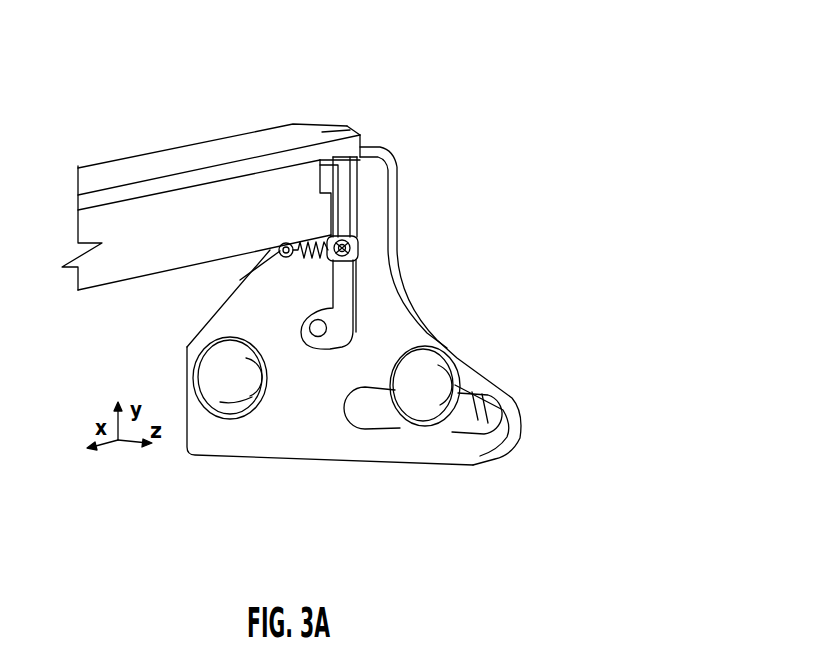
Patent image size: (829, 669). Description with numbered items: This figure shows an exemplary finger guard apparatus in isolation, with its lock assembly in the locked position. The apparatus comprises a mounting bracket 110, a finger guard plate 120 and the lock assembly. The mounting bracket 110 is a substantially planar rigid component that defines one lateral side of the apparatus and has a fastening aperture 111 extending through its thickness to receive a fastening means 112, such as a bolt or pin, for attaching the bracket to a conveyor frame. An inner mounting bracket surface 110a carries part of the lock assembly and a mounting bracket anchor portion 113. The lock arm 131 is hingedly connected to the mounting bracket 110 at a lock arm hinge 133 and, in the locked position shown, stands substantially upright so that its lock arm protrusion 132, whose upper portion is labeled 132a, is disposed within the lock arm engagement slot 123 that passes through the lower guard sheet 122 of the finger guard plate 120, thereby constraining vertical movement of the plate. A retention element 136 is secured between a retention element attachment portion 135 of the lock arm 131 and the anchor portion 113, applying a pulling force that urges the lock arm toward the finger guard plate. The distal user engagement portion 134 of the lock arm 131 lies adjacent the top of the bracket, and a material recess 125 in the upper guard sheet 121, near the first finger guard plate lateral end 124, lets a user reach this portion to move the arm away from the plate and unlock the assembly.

The mounting bracket 110 is at (310, 462).
The inner mounting bracket surface 110a is at (255, 425).
The fastening aperture 111 is at (378, 431).
The fastening means 112 is at (425, 396).
The mounting bracket anchor portion 113 is at (240, 278).
The finger guard plate 120 is at (117, 113).
The upper guard sheet 121 is at (197, 146).
The lower guard sheet 122 is at (104, 258).
The lock arm engagement slot 123 is at (317, 154).
The first finger guard plate lateral end 124 is at (310, 122).
The material recess 125 is at (352, 128).
The lock arm 131 is at (342, 291).
The lock arm protrusion 132 is at (341, 188).
The latch bar end 132a is at (353, 162).
The lock arm hinge 133 is at (318, 338).
The user engagement portion 134 is at (383, 150).
The retention element attachment portion 135 is at (360, 252).
The retention element 136 is at (300, 256).